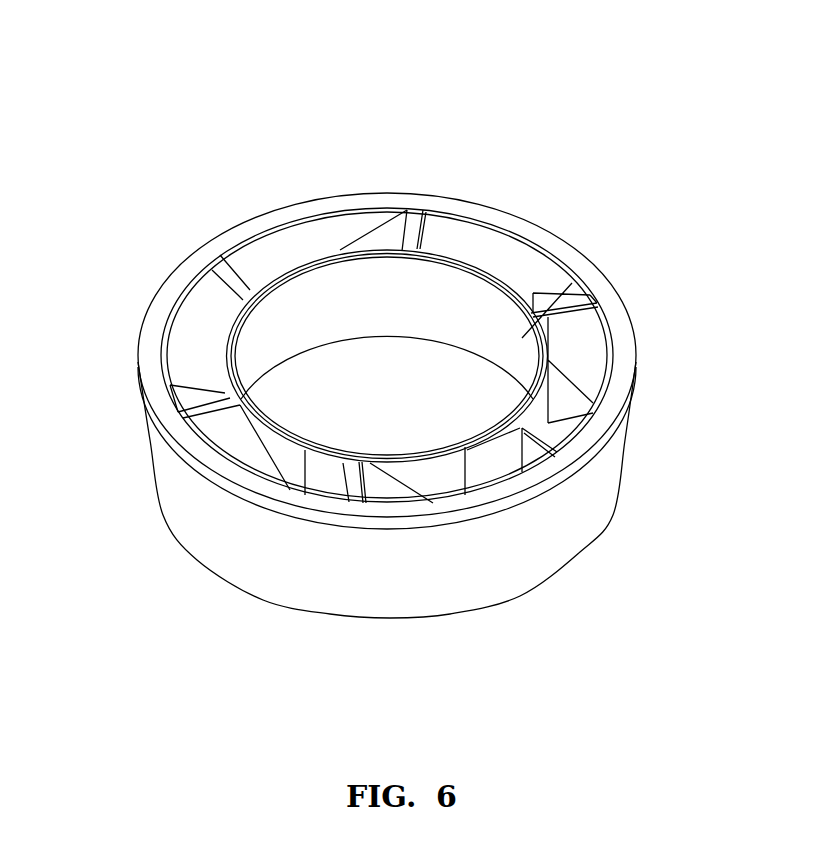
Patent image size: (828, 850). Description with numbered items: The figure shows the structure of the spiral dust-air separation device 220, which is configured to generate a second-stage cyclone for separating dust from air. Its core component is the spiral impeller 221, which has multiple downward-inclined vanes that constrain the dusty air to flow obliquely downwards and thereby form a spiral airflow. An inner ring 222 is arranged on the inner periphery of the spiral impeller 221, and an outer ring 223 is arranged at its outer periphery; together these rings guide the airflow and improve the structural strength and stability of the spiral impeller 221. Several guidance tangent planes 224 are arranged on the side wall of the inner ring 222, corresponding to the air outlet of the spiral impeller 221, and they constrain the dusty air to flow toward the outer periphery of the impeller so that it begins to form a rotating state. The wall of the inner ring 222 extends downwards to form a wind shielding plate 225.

The spiral dust-air separation device 220 is at (370, 351).
The spiral impeller 221 is at (323, 190).
The inner ring 222 is at (606, 297).
The outer ring 223 is at (387, 365).
The guidance tangent plane 224 is at (393, 560).
The wind shielding plate 225 is at (299, 356).